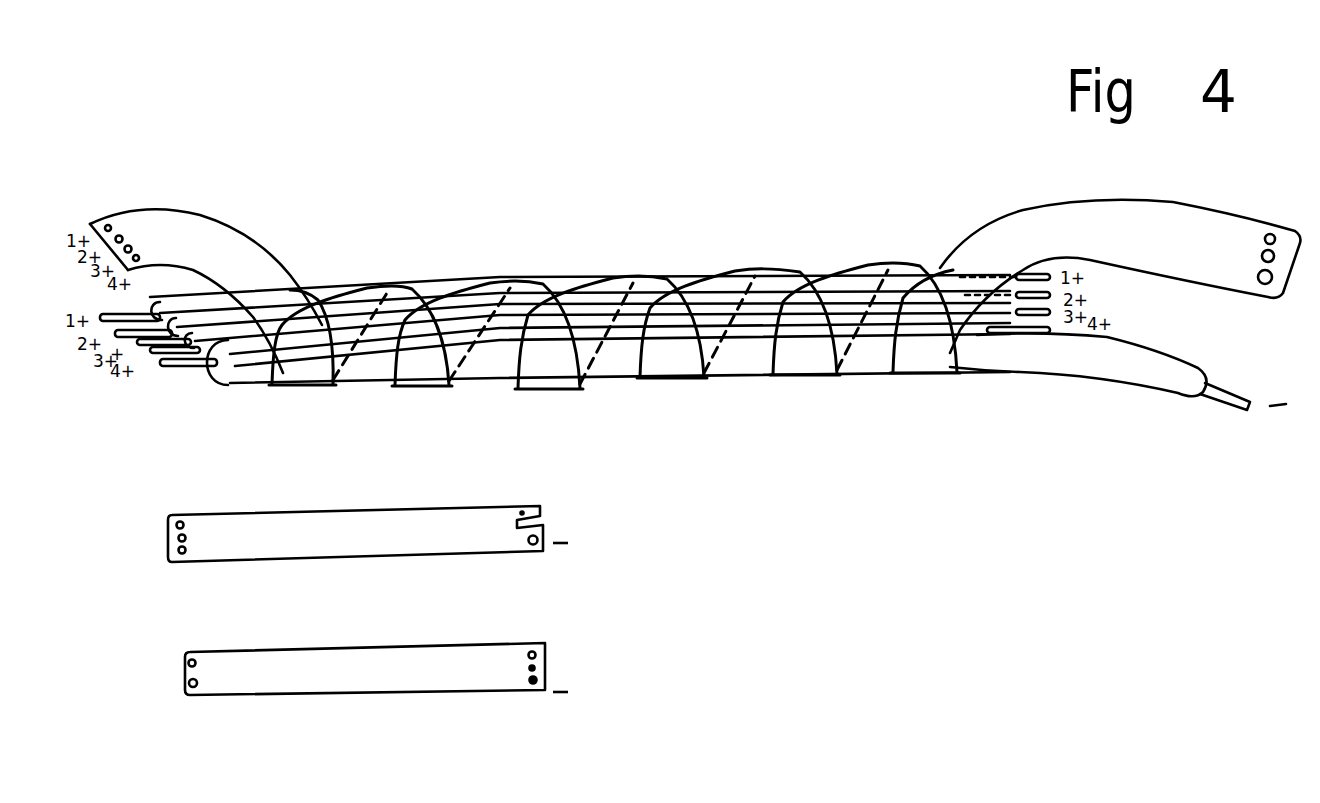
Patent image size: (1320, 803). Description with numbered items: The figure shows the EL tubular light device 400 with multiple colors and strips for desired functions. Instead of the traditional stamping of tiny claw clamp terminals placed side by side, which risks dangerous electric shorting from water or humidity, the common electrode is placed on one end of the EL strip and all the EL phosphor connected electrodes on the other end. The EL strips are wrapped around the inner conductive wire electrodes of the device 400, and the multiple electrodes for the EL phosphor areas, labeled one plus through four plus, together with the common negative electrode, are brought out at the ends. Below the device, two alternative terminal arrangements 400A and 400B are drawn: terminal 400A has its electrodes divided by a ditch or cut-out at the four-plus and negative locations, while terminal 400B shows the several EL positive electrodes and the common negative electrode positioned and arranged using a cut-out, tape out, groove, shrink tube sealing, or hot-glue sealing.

The EL tubular light device with multiple color and strips 400 is at (290, 272).
The terminal 400A is at (355, 554).
The terminal 400B is at (361, 689).